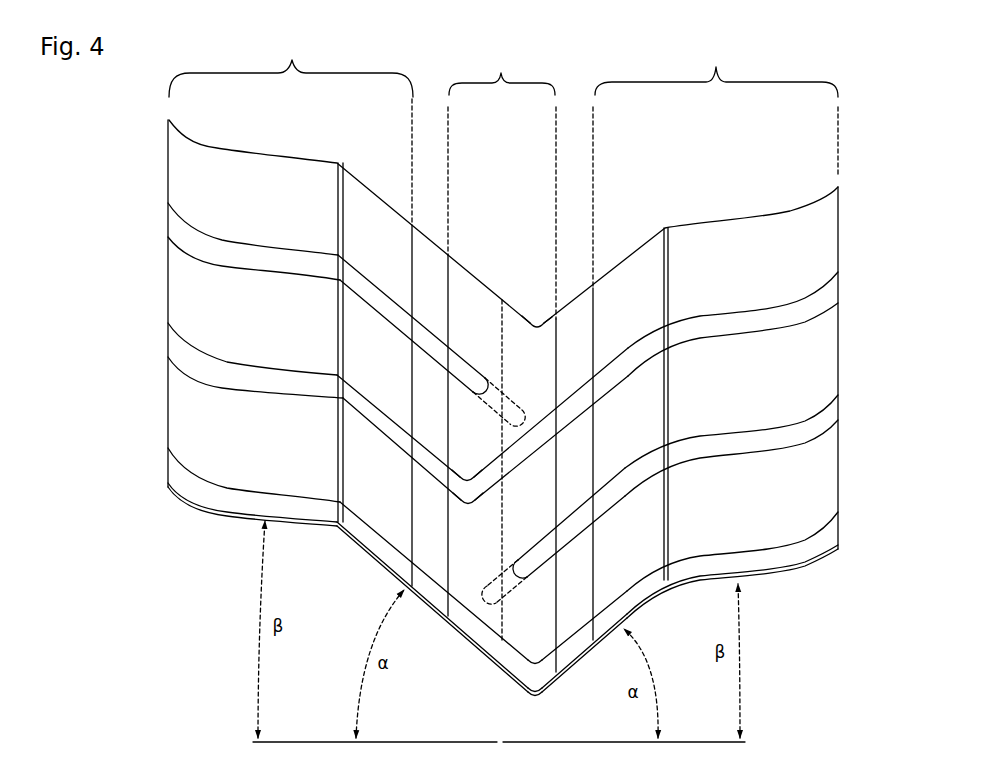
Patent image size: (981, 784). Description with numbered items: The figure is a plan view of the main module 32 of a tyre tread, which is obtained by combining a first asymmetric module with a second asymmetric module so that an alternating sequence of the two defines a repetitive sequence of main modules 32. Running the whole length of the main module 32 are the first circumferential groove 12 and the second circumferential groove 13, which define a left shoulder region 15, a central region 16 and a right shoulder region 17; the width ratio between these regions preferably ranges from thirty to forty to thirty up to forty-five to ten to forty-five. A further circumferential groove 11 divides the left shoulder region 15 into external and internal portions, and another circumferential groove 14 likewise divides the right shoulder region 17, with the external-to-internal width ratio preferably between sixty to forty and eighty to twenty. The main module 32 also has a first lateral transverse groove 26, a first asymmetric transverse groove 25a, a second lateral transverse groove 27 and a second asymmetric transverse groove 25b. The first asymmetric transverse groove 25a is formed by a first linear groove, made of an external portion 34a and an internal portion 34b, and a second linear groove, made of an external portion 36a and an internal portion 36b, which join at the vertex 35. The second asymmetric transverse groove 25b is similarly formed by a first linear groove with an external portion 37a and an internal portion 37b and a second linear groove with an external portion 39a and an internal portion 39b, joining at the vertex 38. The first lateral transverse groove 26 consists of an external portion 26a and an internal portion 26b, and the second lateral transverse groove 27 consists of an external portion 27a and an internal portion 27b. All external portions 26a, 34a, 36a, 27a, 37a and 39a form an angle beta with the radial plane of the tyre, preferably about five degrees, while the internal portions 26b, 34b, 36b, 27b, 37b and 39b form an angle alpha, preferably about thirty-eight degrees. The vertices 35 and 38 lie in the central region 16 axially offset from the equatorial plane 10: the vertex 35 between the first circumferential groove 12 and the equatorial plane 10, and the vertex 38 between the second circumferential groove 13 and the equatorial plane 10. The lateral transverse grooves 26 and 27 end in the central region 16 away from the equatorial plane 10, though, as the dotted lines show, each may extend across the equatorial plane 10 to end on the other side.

The equatorial plane 10 is at (524, 300).
The circumferential groove 11 is at (346, 330).
The first circumferential groove 12 is at (428, 342).
The second circumferential groove 13 is at (580, 373).
The circumferential groove 14 is at (667, 391).
The left shoulder region 15 is at (291, 65).
The central region 16 is at (502, 64).
The right shoulder region 17 is at (716, 71).
The first asymmetric transverse groove 25a is at (178, 351).
The second asymmetric transverse groove 25b is at (825, 548).
The first lateral transverse groove 26 is at (178, 223).
The external portion 26a is at (254, 248).
The internal portion 26b is at (431, 340).
The second lateral transverse groove 27 is at (828, 425).
The external portion 27a is at (731, 445).
The internal portion 27b is at (563, 536).
The main module 32 is at (851, 173).
The external portion 34a is at (255, 368).
The internal portion 34b is at (399, 437).
The vertex 35 is at (467, 501).
The external portion 36a is at (733, 324).
The internal portion 36b is at (556, 424).
The external portion 37a is at (254, 493).
The internal portion 37b is at (432, 597).
The vertex 38 is at (535, 690).
The external portion 39a is at (732, 565).
The internal portion 39b is at (590, 641).